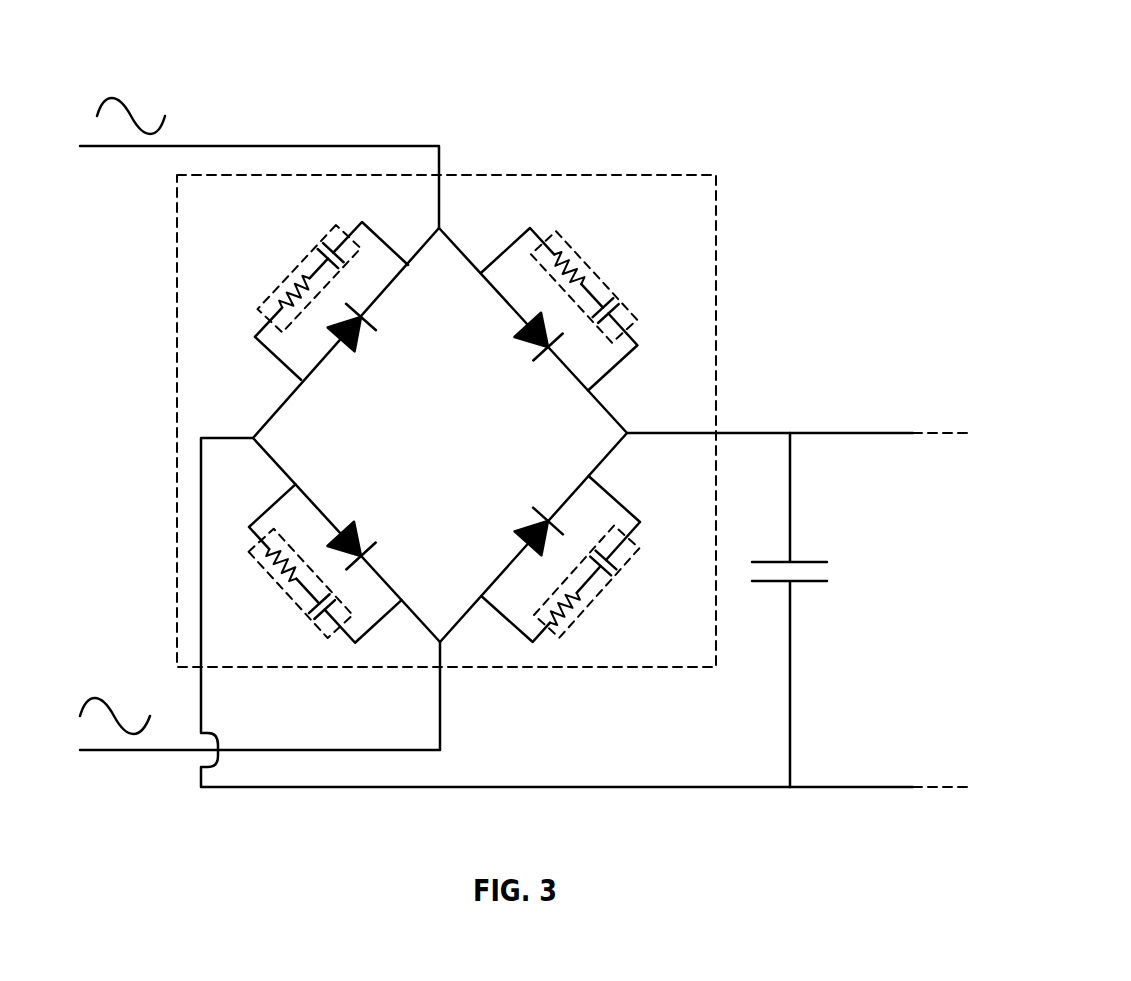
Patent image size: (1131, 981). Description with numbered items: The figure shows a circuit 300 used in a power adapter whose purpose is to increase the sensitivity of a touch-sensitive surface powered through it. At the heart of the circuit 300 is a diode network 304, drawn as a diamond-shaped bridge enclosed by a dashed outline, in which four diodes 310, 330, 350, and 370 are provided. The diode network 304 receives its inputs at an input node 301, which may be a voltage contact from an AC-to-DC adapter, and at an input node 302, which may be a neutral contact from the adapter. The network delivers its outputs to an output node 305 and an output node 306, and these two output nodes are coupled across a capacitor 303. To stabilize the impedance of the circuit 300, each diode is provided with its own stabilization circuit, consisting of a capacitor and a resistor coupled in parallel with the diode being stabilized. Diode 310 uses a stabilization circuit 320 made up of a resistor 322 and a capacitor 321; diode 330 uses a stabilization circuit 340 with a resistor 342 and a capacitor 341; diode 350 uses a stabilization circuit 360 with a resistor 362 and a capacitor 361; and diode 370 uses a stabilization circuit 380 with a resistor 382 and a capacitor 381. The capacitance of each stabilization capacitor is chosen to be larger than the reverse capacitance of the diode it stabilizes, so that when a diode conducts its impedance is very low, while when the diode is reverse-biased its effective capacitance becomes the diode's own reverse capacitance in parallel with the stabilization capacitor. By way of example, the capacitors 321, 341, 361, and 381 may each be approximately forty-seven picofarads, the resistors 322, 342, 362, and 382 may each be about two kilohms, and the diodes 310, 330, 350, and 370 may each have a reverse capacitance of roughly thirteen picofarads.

The circuit 300 is at (572, 419).
The input node 301 is at (290, 146).
The input node 302 is at (287, 750).
The capacitor 303 is at (790, 538).
The diode network 304 is at (688, 176).
The output node 305 is at (913, 433).
The output node 306 is at (915, 787).
The diode 310 is at (350, 330).
The stabilization circuit 320 is at (352, 238).
The capacitor 321 is at (320, 268).
The resistor 322 is at (273, 314).
The diode 330 is at (530, 347).
The stabilization circuit 340 is at (601, 262).
The capacitor 341 is at (621, 310).
The resistor 342 is at (562, 258).
The diode 350 is at (350, 527).
The stabilization circuit 360 is at (278, 533).
The capacitor 361 is at (335, 595).
The resistor 362 is at (262, 560).
The diode 370 is at (525, 523).
The stabilization circuit 380 is at (614, 561).
The capacitor 381 is at (592, 552).
The resistor 382 is at (552, 614).